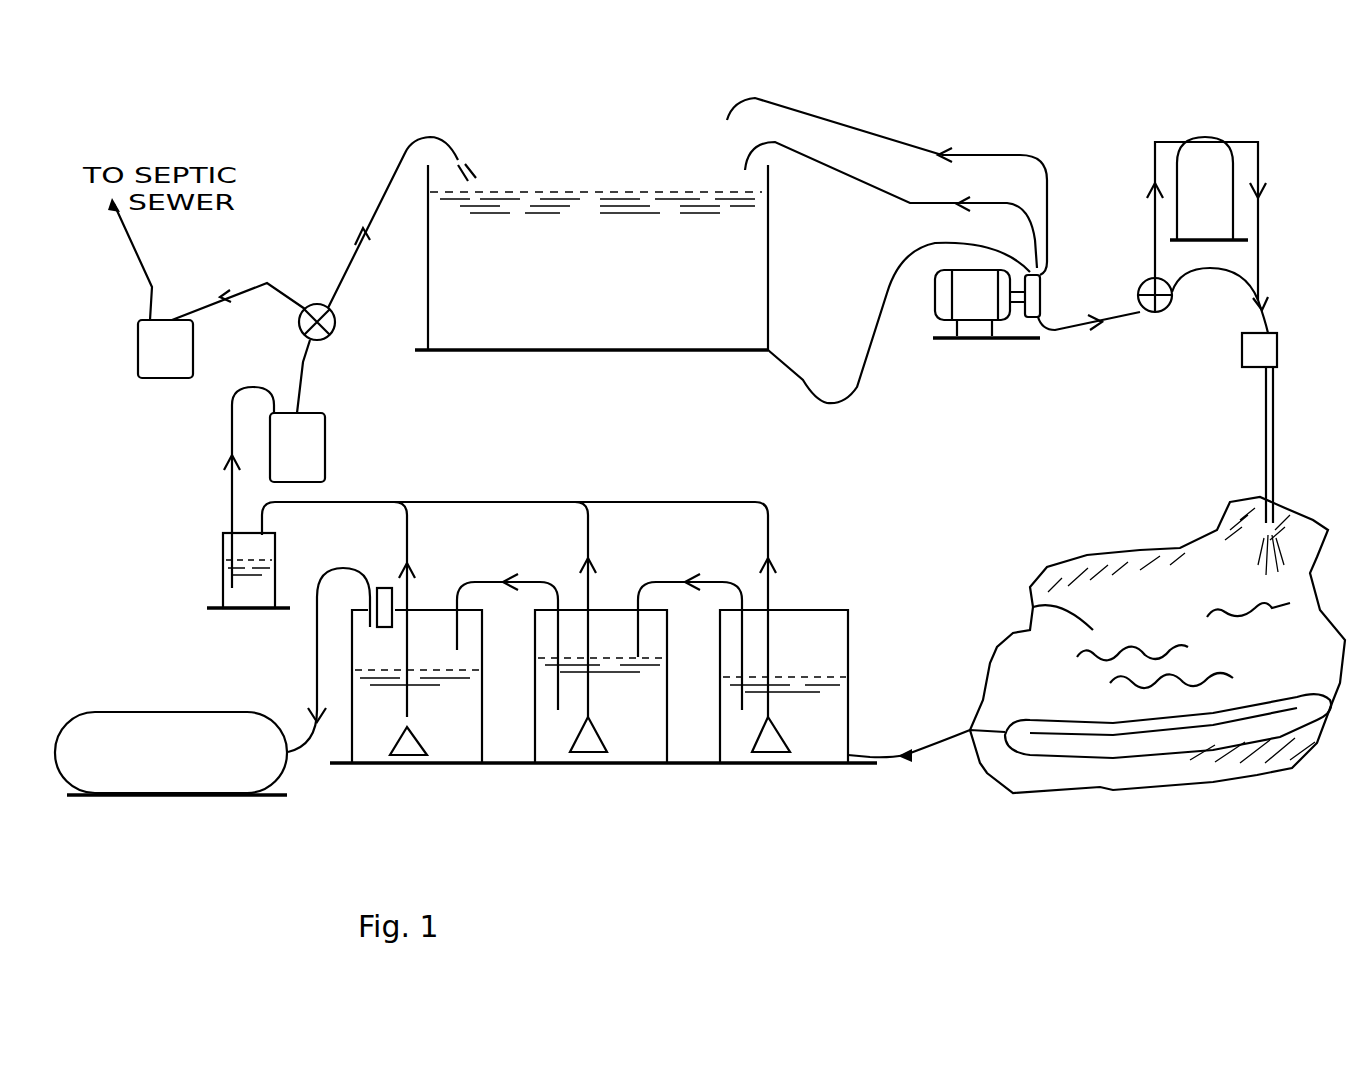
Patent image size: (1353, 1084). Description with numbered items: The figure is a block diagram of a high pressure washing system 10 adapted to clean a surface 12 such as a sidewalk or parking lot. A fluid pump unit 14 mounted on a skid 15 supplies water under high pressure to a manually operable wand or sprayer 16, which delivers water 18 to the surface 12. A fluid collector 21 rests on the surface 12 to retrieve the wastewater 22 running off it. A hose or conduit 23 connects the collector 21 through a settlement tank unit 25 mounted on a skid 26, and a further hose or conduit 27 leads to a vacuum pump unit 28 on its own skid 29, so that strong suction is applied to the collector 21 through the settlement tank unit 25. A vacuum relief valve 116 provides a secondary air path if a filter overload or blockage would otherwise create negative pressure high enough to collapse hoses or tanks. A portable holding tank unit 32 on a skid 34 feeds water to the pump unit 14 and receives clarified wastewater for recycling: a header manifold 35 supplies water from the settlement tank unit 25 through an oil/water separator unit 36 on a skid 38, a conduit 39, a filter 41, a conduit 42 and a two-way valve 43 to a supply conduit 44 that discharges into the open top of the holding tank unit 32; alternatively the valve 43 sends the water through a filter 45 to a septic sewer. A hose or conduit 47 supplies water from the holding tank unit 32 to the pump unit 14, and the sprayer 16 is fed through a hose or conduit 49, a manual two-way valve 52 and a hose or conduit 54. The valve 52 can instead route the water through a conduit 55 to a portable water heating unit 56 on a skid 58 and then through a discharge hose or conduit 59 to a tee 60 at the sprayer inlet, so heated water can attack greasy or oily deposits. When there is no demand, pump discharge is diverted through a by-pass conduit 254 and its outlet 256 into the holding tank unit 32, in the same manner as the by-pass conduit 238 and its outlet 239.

The high pressure washing system 10 is at (282, 865).
The surface 12 is at (1017, 668).
The fluid pump unit 14 is at (965, 366).
The skid 15 is at (932, 341).
The wand or sprayer 16 is at (1240, 363).
The water 18 is at (1260, 555).
The fluid collector 21 is at (1010, 758).
The wastewater 22 is at (1098, 633).
The hose or conduit 23 is at (935, 742).
The settlement tank unit 25 is at (808, 584).
The skid 26 is at (693, 765).
The hose or conduit 27 is at (315, 683).
The vacuum pump unit 28 is at (112, 728).
The skid 29 is at (188, 797).
The portable holding tank unit 32 is at (845, 228).
The skid 34 is at (597, 353).
The main conduit or header manifold 35 is at (382, 503).
The oil/water separator unit 36 is at (218, 582).
The skid 38 is at (208, 606).
The conduit 39 is at (230, 432).
The filter 41 is at (325, 462).
The conduit 42 is at (300, 378).
The two-way valve 43 is at (321, 341).
The supply conduit 44 is at (350, 262).
The filter 45 is at (193, 348).
The hose or conduit 47 is at (857, 387).
The hose or conduit 49 is at (1070, 330).
The manual two-way valve 52 is at (1147, 313).
The hose or conduit 54 is at (1237, 278).
The conduit 55 is at (1155, 175).
The portable water heating unit 56 is at (1170, 210).
The skid 58 is at (1170, 238).
The discharge hose or conduit 59 is at (1258, 218).
The tee 60 is at (1268, 290).
The vacuum relief valve 116 is at (385, 587).
The by-pass conduit 238 is at (960, 153).
The outlet 239 is at (727, 113).
The by-pass conduit 254 is at (930, 203).
The outlet 256 is at (748, 157).